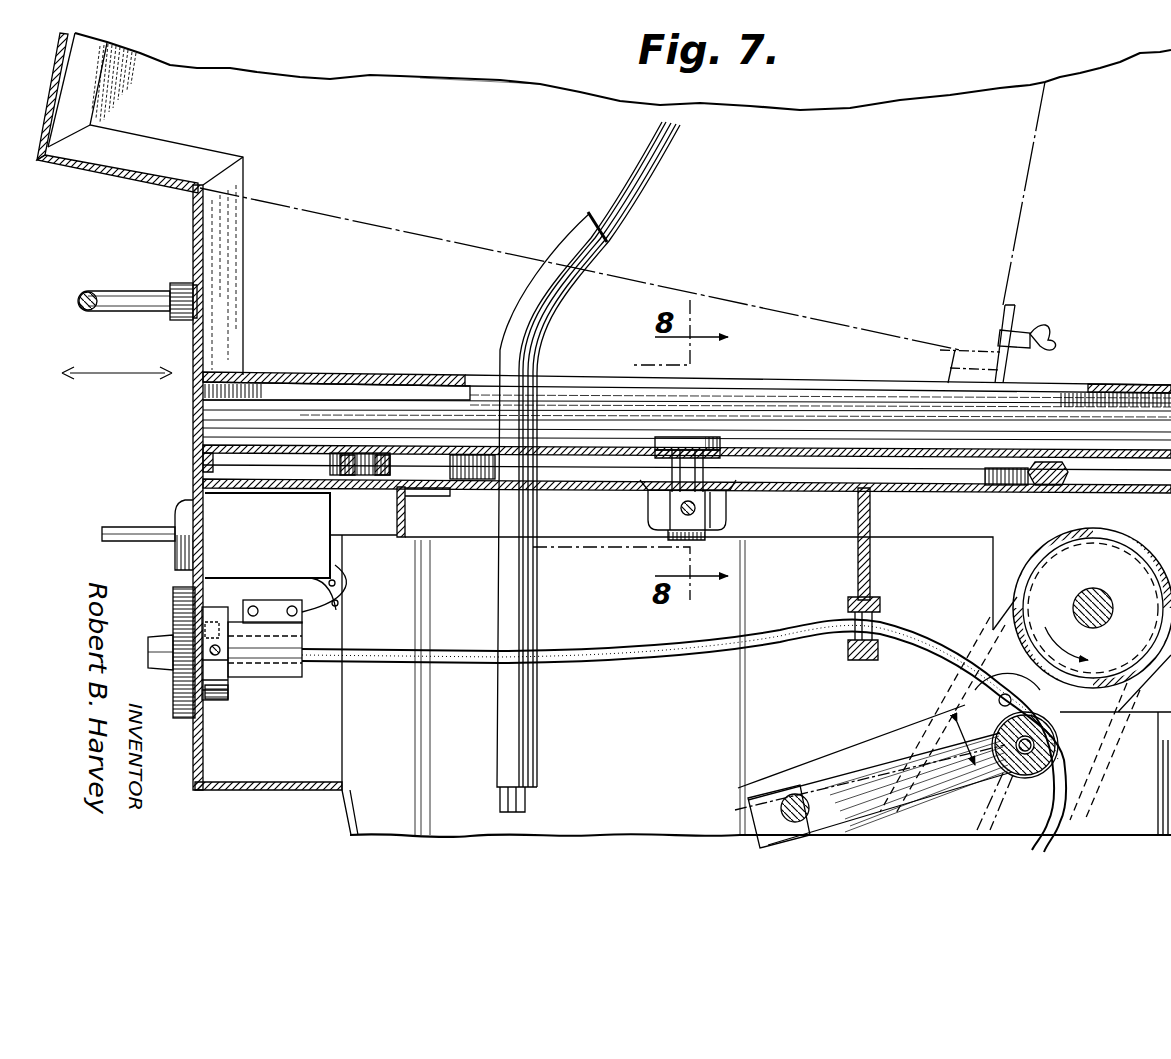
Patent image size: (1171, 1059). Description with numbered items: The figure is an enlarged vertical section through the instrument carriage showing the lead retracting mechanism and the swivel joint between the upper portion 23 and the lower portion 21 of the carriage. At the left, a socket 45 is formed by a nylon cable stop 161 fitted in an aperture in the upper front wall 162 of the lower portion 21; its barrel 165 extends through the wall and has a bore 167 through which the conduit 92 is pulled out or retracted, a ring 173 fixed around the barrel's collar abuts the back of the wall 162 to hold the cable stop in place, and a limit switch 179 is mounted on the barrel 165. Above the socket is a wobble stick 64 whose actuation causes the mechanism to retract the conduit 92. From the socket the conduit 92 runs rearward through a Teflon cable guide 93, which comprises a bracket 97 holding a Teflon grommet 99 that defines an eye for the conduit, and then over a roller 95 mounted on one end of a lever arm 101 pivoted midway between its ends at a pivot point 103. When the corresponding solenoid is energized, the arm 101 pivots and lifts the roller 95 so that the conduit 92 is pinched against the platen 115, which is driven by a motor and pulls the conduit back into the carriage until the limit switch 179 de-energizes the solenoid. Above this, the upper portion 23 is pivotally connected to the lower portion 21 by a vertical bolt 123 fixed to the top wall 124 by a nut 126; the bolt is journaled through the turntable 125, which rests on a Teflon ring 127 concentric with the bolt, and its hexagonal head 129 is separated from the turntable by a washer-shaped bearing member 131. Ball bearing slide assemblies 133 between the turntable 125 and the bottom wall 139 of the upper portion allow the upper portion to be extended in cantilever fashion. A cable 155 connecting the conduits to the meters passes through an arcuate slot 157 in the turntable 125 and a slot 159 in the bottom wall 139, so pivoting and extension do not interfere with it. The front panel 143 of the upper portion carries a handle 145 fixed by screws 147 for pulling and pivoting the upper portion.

The lower portion of the carriage 21 is at (342, 812).
The upper portion of the carriage 23 is at (497, 90).
The socket 45 is at (178, 708).
The wobble stick 64 is at (115, 527).
The conduit 92 is at (683, 662).
The Teflon cable guide 93 is at (855, 658).
The roller 95 is at (1032, 782).
The bracket 97 is at (858, 572).
The Teflon grommet 99 is at (852, 604).
The lever arm 101 is at (900, 722).
The pivot point 103 is at (790, 795).
The platen 115 is at (1060, 540).
The bolt 123 is at (645, 478).
The top wall 124 is at (978, 492).
The turntable 125 is at (882, 448).
The nut 126 is at (725, 507).
The Teflon ring 127 is at (1070, 468).
The hexagonal head 129 is at (695, 432).
The washer-shaped bearing member 131 is at (648, 445).
The ball bearing slide assembly 133 is at (1040, 400).
The bottom wall 139 is at (333, 370).
The front panel 143 is at (190, 228).
The handle 145 is at (112, 292).
The screws 147 is at (205, 302).
The cable 155 is at (572, 232).
The arcuate slot 157 is at (480, 445).
The slot 159 is at (812, 385).
The nylon cable stop 161 is at (178, 615).
The upper front wall 162 is at (195, 485).
The barrel 165 is at (268, 675).
The bore 167 is at (290, 685).
The ring 173 is at (218, 700).
The limit switch 179 is at (268, 607).